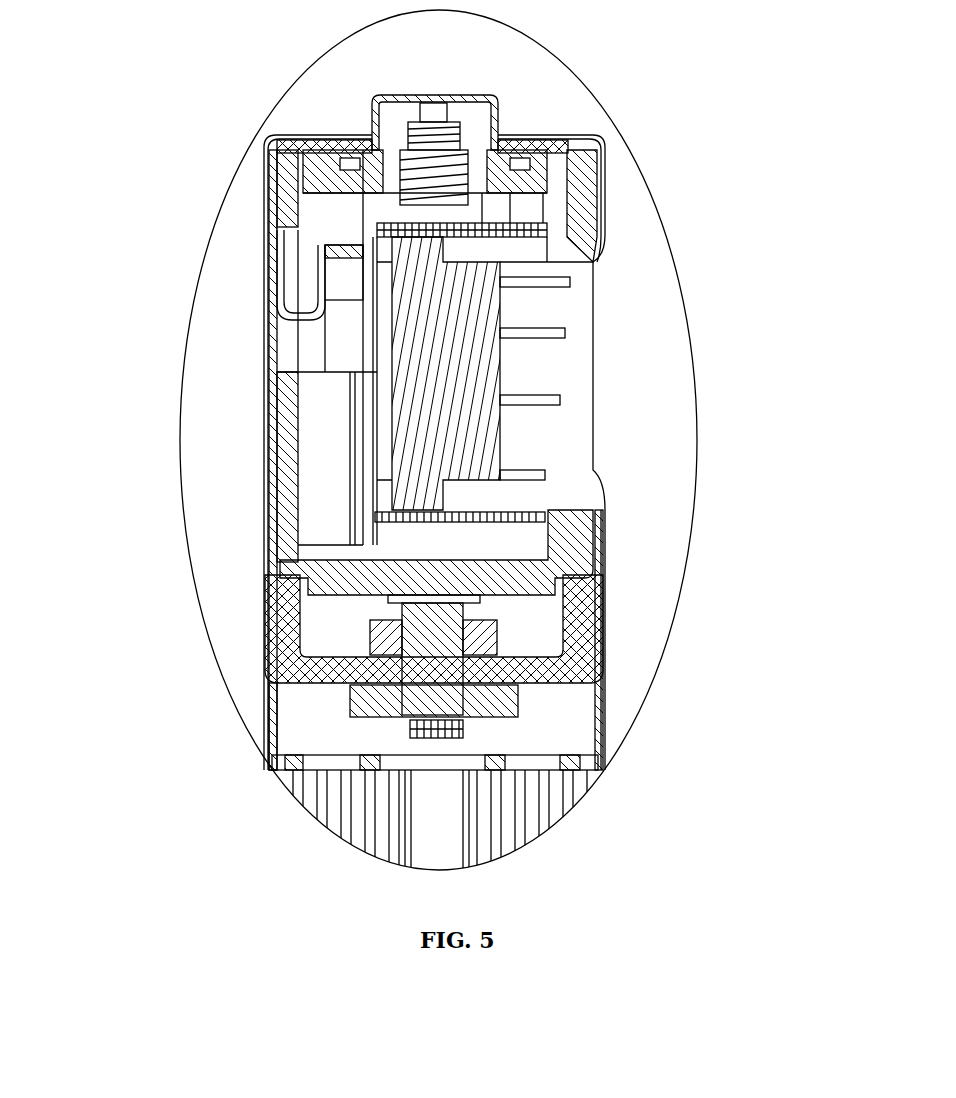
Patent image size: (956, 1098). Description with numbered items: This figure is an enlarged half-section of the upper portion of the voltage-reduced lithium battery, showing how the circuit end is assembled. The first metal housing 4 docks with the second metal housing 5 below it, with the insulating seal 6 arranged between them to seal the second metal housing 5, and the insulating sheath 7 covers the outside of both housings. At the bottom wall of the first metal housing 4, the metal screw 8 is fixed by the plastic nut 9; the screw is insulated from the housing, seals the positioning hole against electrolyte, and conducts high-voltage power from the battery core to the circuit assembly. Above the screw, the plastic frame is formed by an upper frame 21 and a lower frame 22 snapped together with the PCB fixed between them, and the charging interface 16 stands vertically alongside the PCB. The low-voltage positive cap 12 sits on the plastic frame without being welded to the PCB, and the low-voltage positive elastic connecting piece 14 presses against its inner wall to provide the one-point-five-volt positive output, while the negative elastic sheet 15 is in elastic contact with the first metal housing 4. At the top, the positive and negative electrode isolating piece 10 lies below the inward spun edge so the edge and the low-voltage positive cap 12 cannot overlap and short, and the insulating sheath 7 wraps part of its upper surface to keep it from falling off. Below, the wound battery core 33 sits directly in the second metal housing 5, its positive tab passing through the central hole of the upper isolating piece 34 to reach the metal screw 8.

The first metal housing 4 is at (280, 561).
The second metal housing 5 is at (266, 706).
The insulating seal 6 is at (265, 643).
The insulating sheath 7 is at (272, 418).
The metal screw 8 is at (520, 705).
The plastic nut 9 is at (497, 637).
The positive and negative electrode isolating piece 10 is at (272, 136).
The low-voltage positive cap 12 is at (493, 100).
The low-voltage positive elastic connecting piece 14 is at (503, 143).
The negative elastic sheet 15 is at (273, 285).
The charging interface 16 is at (533, 362).
The upper frame 21 is at (272, 190).
The lower frame 22 is at (568, 543).
The wound battery core 33 is at (365, 800).
The upper isolating piece 34 is at (510, 765).